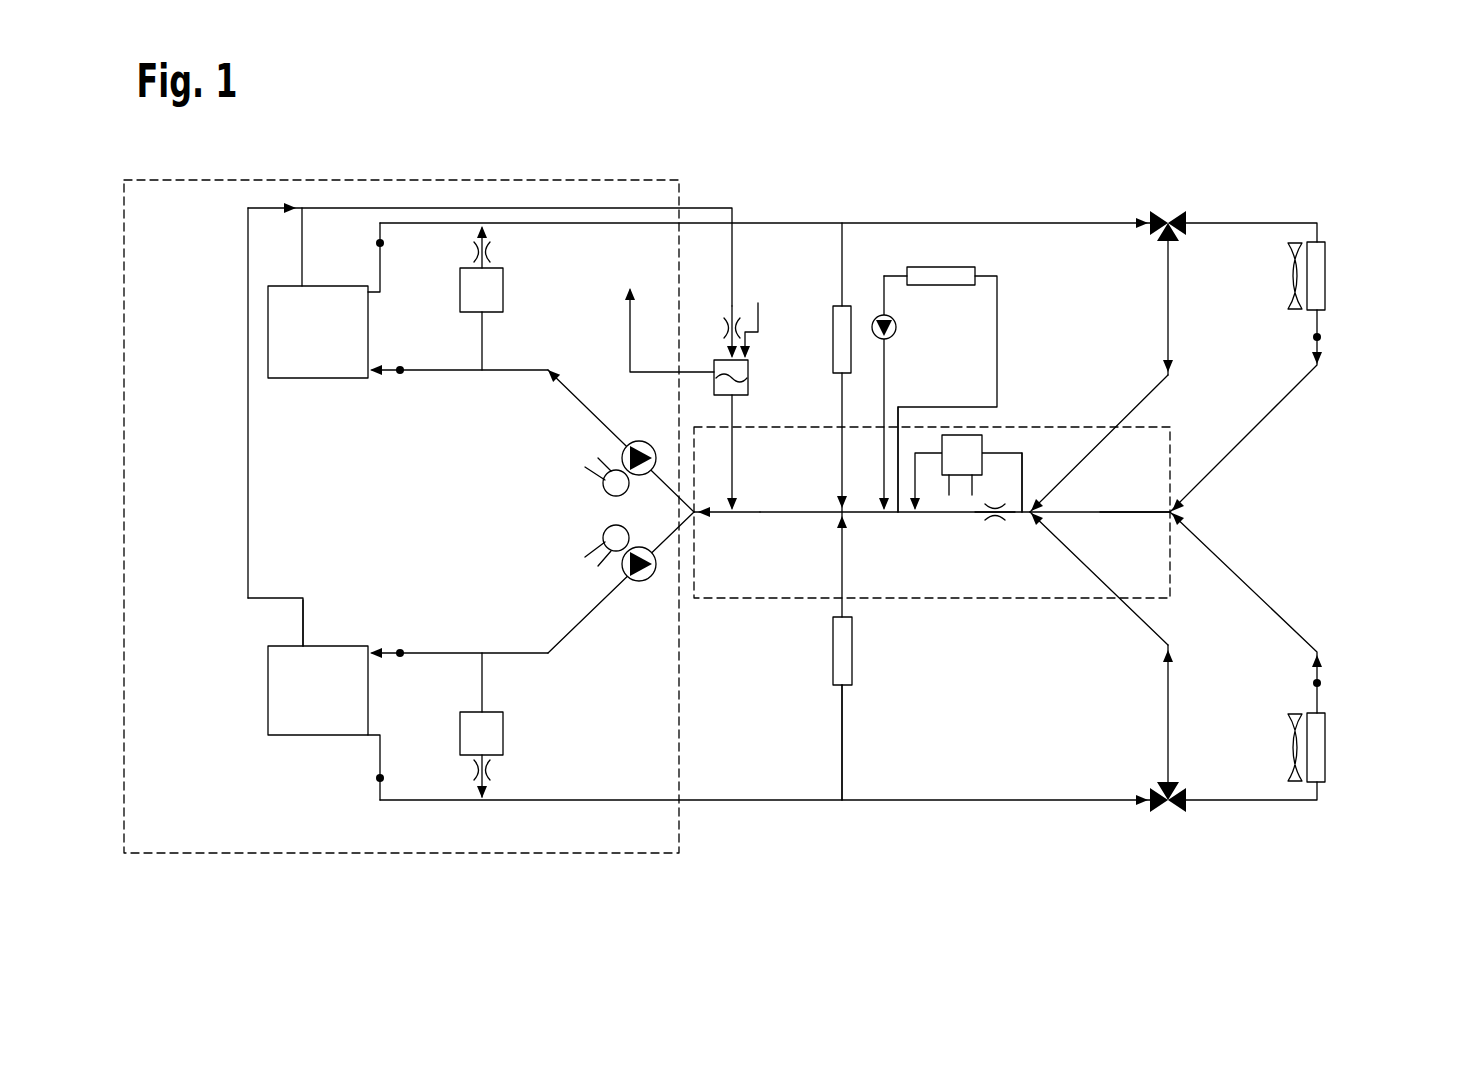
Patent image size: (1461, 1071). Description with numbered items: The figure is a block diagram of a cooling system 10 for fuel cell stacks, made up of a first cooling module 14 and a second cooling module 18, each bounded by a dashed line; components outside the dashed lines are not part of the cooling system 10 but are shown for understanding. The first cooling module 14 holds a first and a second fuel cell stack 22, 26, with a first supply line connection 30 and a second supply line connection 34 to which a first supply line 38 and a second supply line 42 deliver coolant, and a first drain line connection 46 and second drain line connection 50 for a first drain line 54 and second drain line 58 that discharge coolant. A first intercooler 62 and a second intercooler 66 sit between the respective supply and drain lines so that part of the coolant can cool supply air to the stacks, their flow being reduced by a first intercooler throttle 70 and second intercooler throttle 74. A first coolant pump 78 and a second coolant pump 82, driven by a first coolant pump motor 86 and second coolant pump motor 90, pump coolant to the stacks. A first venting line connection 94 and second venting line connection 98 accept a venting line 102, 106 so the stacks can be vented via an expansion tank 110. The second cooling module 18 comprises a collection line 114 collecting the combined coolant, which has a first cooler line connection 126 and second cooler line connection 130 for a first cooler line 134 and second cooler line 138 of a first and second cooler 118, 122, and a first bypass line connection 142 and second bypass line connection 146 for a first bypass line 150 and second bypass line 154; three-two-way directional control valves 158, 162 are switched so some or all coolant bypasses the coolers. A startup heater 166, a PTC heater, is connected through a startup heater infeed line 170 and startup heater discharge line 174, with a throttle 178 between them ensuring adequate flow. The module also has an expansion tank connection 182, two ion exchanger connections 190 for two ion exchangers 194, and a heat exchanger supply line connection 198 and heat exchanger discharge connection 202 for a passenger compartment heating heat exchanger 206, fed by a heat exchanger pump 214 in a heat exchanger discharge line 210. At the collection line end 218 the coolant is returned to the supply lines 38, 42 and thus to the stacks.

The cooling system 10 is at (655, 112).
The first cooling module 14 is at (660, 178).
The second cooling module 18 is at (757, 427).
The first fuel cell stack 22 is at (268, 330).
The second fuel cell stack 26 is at (268, 683).
The first supply line connection 30 is at (400, 378).
The second supply line connection 34 is at (400, 651).
The first supply line 38 is at (445, 373).
The second supply line 42 is at (446, 651).
The first drain line connection 46 is at (380, 243).
The second drain line connection 50 is at (380, 778).
The first drain line 54 is at (428, 223).
The second drain line 58 is at (430, 800).
The first intercooler 62 is at (503, 292).
The second intercooler 66 is at (503, 732).
The first intercooler throttle 70 is at (490, 253).
The second intercooler throttle 74 is at (492, 771).
The first coolant pump 78 is at (622, 452).
The second coolant pump 82 is at (645, 583).
The first coolant pump motor 86 is at (604, 488).
The second coolant pump motor 90 is at (604, 535).
The first venting line connection 94 is at (302, 276).
The second venting line connection 98 is at (303, 634).
The venting line 102 is at (302, 236).
The venting line 106 is at (248, 573).
The expansion tank 110 is at (714, 388).
The collection line 114 is at (1138, 515).
The first cooler 118 is at (1325, 276).
The second cooler 122 is at (1325, 746).
The first cooler line connection 126 is at (1180, 506).
The second cooler line connection 130 is at (1180, 518).
The first cooler line 134 is at (1285, 402).
The second cooler line 138 is at (1292, 620).
The first bypass line connection 142 is at (1047, 497).
The second bypass line connection 146 is at (1035, 522).
The first bypass line 150 is at (1173, 393).
The second bypass line 154 is at (1130, 614).
The 3/2-way directional control valve 158 is at (1168, 211).
The 3/2-way directional control valve 162 is at (1168, 812).
The startup heater 166 is at (955, 435).
The startup heater infeed line 170 is at (1020, 453).
The startup heater discharge line 174 is at (993, 522).
The throttle 178 is at (994, 524).
The expansion tank connection 182 is at (745, 525).
The ion exchanger connections 190 is at (840, 512).
The ion exchangers 194 is at (833, 340).
The heat exchanger supply line connection 198 is at (902, 522).
The heat exchanger discharge connection 202 is at (884, 522).
The heat exchanger 206 is at (962, 266).
The heat exchanger discharge line 210 is at (886, 274).
The heat exchanger pump 214 is at (877, 316).
The collection line end 218 is at (700, 522).